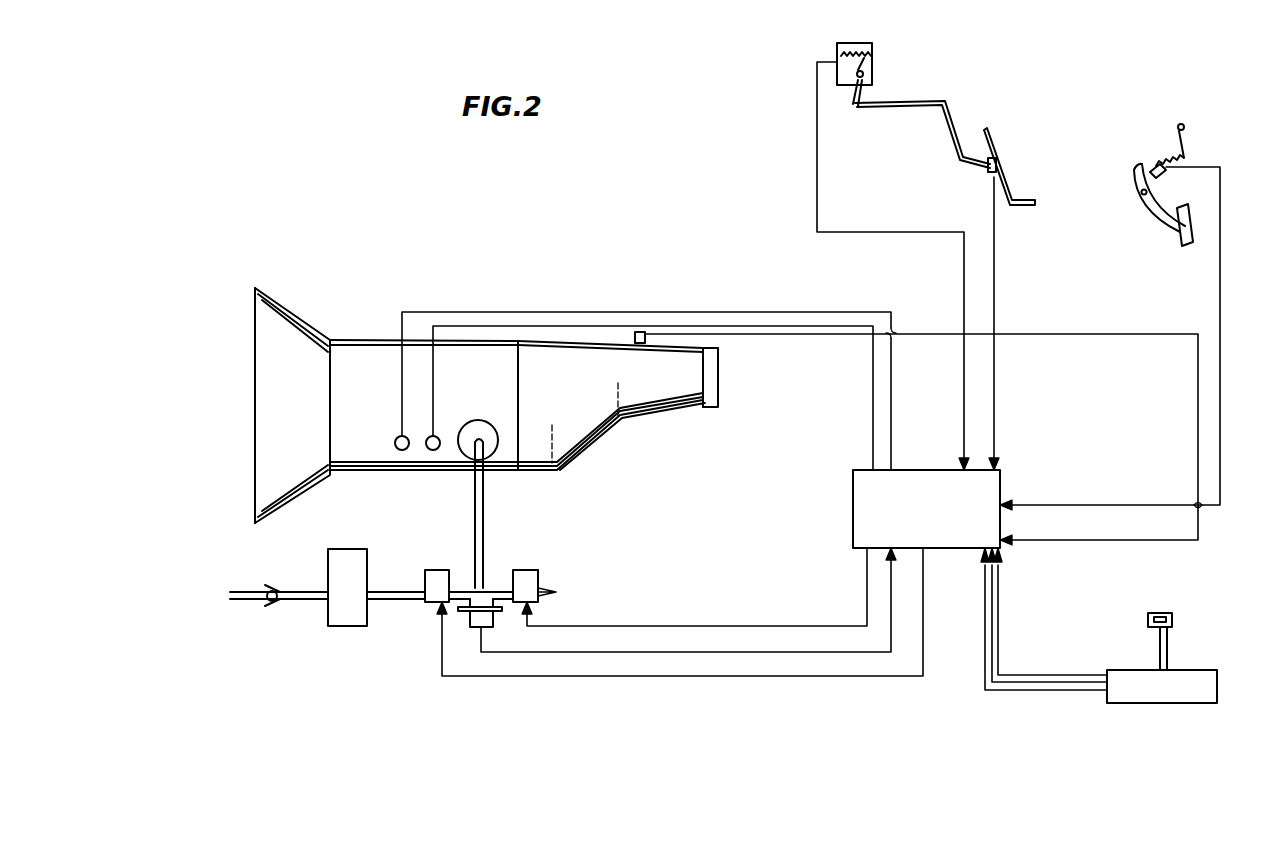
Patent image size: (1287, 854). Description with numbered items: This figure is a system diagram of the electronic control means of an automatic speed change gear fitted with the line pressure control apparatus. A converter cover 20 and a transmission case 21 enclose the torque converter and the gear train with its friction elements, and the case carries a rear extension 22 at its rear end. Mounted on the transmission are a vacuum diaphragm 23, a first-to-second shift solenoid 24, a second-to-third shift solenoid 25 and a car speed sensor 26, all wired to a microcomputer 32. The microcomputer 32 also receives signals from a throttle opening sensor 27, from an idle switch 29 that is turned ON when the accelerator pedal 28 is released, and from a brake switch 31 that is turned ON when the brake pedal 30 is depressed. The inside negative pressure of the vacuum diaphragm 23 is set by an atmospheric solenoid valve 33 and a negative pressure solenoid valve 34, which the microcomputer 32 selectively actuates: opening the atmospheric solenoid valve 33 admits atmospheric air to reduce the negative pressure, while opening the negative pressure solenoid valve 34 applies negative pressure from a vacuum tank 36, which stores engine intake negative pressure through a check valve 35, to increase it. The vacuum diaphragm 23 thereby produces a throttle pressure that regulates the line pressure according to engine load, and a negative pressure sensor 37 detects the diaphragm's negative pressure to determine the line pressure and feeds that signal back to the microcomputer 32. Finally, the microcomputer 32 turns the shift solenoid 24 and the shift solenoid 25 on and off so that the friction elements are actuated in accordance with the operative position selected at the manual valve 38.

The converter cover 20 is at (290, 314).
The transmission case 21 is at (370, 343).
The rear extension 22 is at (608, 448).
The vacuum diaphragm 23 is at (498, 439).
The 1-2 shift solenoid 24 is at (437, 437).
The 2-3 shift solenoid 25 is at (397, 437).
The car speed sensor 26 is at (640, 331).
The throttle opening sensor 27 is at (875, 72).
The accelerator pedal 28 is at (999, 136).
The idle switch 29 is at (987, 170).
The brake pedal 30 is at (1150, 218).
The brake switch 31 is at (1170, 165).
The microcomputer 32 is at (853, 522).
The atmospheric solenoid valve 33 is at (540, 574).
The negative pressure solenoid valve 34 is at (436, 570).
The check valve 35 is at (268, 604).
The vacuum tank 36 is at (352, 628).
The negative pressure sensor 37 is at (485, 630).
The manual valve 38 is at (1186, 670).